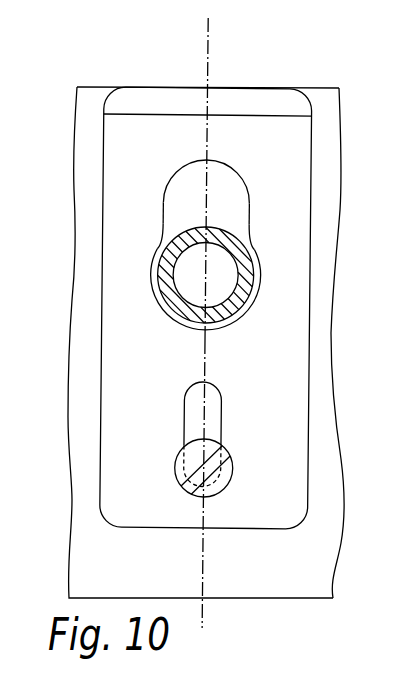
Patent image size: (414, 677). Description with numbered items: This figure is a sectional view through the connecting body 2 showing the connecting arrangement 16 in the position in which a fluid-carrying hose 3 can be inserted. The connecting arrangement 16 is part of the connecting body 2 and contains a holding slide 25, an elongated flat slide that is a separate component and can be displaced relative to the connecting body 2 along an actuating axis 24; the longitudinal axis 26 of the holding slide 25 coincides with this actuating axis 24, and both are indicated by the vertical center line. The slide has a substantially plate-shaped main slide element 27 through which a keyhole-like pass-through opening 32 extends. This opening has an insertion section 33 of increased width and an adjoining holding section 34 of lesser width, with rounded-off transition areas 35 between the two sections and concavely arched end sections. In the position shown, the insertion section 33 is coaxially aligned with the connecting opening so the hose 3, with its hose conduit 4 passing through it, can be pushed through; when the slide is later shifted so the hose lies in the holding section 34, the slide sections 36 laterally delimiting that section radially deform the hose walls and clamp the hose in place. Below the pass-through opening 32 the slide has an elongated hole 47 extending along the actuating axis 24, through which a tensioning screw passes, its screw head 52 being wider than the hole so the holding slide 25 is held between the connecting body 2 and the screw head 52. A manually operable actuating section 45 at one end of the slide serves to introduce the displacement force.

The connecting body 2 is at (327, 428).
The fluid-carrying hose 3 is at (228, 326).
The hose conduit 4 is at (170, 228).
The connecting arrangement 16 is at (263, 196).
The actuating axis 24 is at (210, 31).
The longitudinal axis 26 is at (203, 484).
The holding slide 25 is at (127, 437).
The main slide element 27 is at (292, 331).
The pass-through opening 32 is at (243, 218).
The insertion section 33 is at (165, 302).
The holding section 34 is at (244, 193).
The transition areas 35 is at (158, 232).
The slide sections 36 is at (253, 209).
The actuating section 45 is at (168, 100).
The elongated hole 47 is at (222, 407).
The screw head 52 is at (232, 483).